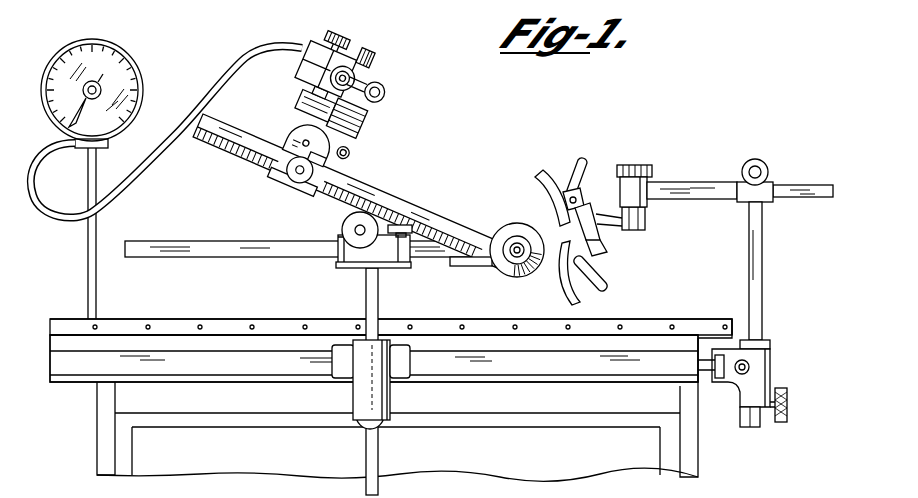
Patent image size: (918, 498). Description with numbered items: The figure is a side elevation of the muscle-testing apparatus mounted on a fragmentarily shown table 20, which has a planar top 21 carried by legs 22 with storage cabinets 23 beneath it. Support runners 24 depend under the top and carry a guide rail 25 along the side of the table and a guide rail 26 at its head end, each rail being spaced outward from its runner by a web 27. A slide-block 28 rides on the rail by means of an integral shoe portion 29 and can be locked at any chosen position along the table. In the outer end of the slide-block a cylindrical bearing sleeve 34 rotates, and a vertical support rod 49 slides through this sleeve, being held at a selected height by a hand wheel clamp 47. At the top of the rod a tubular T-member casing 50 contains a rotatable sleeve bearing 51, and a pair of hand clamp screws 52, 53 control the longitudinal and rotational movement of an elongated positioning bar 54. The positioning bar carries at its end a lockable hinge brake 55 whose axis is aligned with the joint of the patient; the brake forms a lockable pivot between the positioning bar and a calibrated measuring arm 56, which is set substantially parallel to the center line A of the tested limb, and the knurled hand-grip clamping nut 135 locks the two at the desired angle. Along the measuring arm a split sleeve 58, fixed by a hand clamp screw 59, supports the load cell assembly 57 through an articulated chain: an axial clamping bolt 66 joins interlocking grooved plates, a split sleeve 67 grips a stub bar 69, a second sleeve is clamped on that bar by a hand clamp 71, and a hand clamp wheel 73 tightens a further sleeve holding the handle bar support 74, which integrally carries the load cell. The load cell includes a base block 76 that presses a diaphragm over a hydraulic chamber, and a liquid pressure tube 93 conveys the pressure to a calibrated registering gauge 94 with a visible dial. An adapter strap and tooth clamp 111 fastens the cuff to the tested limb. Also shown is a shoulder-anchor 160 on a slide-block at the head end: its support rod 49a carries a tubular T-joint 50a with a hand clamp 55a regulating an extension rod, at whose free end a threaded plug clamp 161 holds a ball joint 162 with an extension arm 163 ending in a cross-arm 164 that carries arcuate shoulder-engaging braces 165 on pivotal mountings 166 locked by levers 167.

The table 20 is at (84, 378).
The planar top 21 is at (247, 318).
The legs 22 is at (97, 443).
The storage cabinets 23 is at (262, 463).
The support runners 24 is at (712, 338).
The guide rail 25 is at (190, 360).
The head-end guide rail 26 is at (722, 354).
The web 27 is at (712, 380).
The slide-block 28 is at (349, 400).
The shoe portion 29 is at (343, 350).
The cylindrical tubular bearing sleeve 34 is at (390, 343).
The hand wheel clamp 47 is at (788, 398).
The vertical support rod 49 is at (378, 300).
The support rod 49a is at (763, 263).
The tubular T-member casing 50 is at (360, 259).
The tubular T-joint 50a is at (772, 203).
The rotatable sleeve bearing 51 is at (337, 236).
The hand clamp screw 52 is at (355, 216).
The hand clamp screw 53 is at (412, 227).
The positioning bar 54 is at (216, 244).
The lockable hinge brake 55 is at (517, 229).
The hand clamp 55a is at (751, 158).
The calibrated measuring arm 56 is at (227, 137).
The hydraulic pressure diaphragm assembly 57 is at (295, 73).
The split sleeve 58 is at (288, 154).
The hand clamp screw 59 is at (287, 176).
The axial clamping bolt 66 is at (351, 151).
The split sleeve 67 is at (362, 134).
The stub bar 69 is at (373, 58).
The clamping bolt and hand clamp 71 is at (386, 92).
The threaded bolt and hand clamp wheel 73 is at (324, 40).
The handle bar support 74 is at (354, 79).
The base block 76 is at (293, 104).
The liquid pressure tube 93 is at (214, 94).
The calibrated registering gauge 94 is at (124, 50).
The strap and tooth clamp 111 is at (292, 195).
The knurled hand-grip clamping nut 135 is at (504, 268).
The shoulder-anchor 160 is at (717, 174).
The threaded plug releasable clamp 161 is at (624, 177).
The ball joint 162 is at (646, 220).
The extension arm 163 is at (604, 236).
The cross-arm 164 is at (600, 253).
The arcuate shoulder-engaging brace 165 is at (537, 180).
The pivotal mounting 166 is at (578, 200).
The levers 167 is at (582, 160).
The center line of tested anatomy member A is at (410, 172).